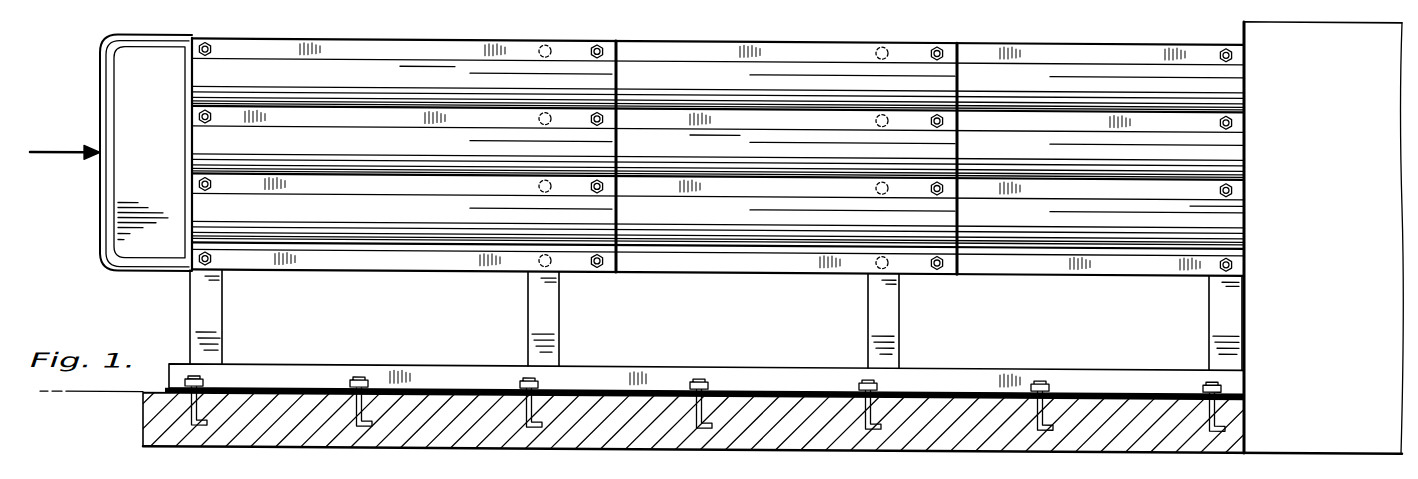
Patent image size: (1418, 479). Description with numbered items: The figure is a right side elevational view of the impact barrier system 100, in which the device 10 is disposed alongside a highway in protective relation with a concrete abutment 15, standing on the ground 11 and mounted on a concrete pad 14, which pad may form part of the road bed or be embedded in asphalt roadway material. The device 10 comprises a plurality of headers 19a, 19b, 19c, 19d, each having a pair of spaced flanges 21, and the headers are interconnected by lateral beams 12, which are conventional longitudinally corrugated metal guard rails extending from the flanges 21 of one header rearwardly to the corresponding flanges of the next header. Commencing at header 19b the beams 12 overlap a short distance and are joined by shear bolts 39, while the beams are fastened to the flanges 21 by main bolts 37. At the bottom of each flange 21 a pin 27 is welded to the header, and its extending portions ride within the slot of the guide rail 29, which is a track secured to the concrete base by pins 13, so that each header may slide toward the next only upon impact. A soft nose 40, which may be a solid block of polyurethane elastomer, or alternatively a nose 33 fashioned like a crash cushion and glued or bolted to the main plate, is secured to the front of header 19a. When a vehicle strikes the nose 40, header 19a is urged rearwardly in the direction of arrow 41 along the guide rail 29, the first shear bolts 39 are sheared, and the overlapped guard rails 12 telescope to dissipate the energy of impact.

The device 10 is at (287, 33).
The system 100 is at (694, 24).
The ground 11 is at (83, 433).
The lateral beam 12 is at (432, 64).
The pin 13 is at (362, 378).
The concrete pad 14 is at (781, 388).
The concrete abutment 15 is at (1260, 28).
The header 19a is at (228, 313).
The header 19b is at (566, 310).
The header 19c is at (897, 325).
The header 19d is at (1198, 314).
The flange 21 is at (196, 316).
The pin 27 is at (220, 360).
The guide rail 29 is at (441, 370).
The nose 33 is at (103, 188).
The main bolt 37 is at (206, 42).
The shear bolt 39 is at (598, 42).
The soft nose 40 is at (125, 58).
The arrow 41 is at (69, 150).